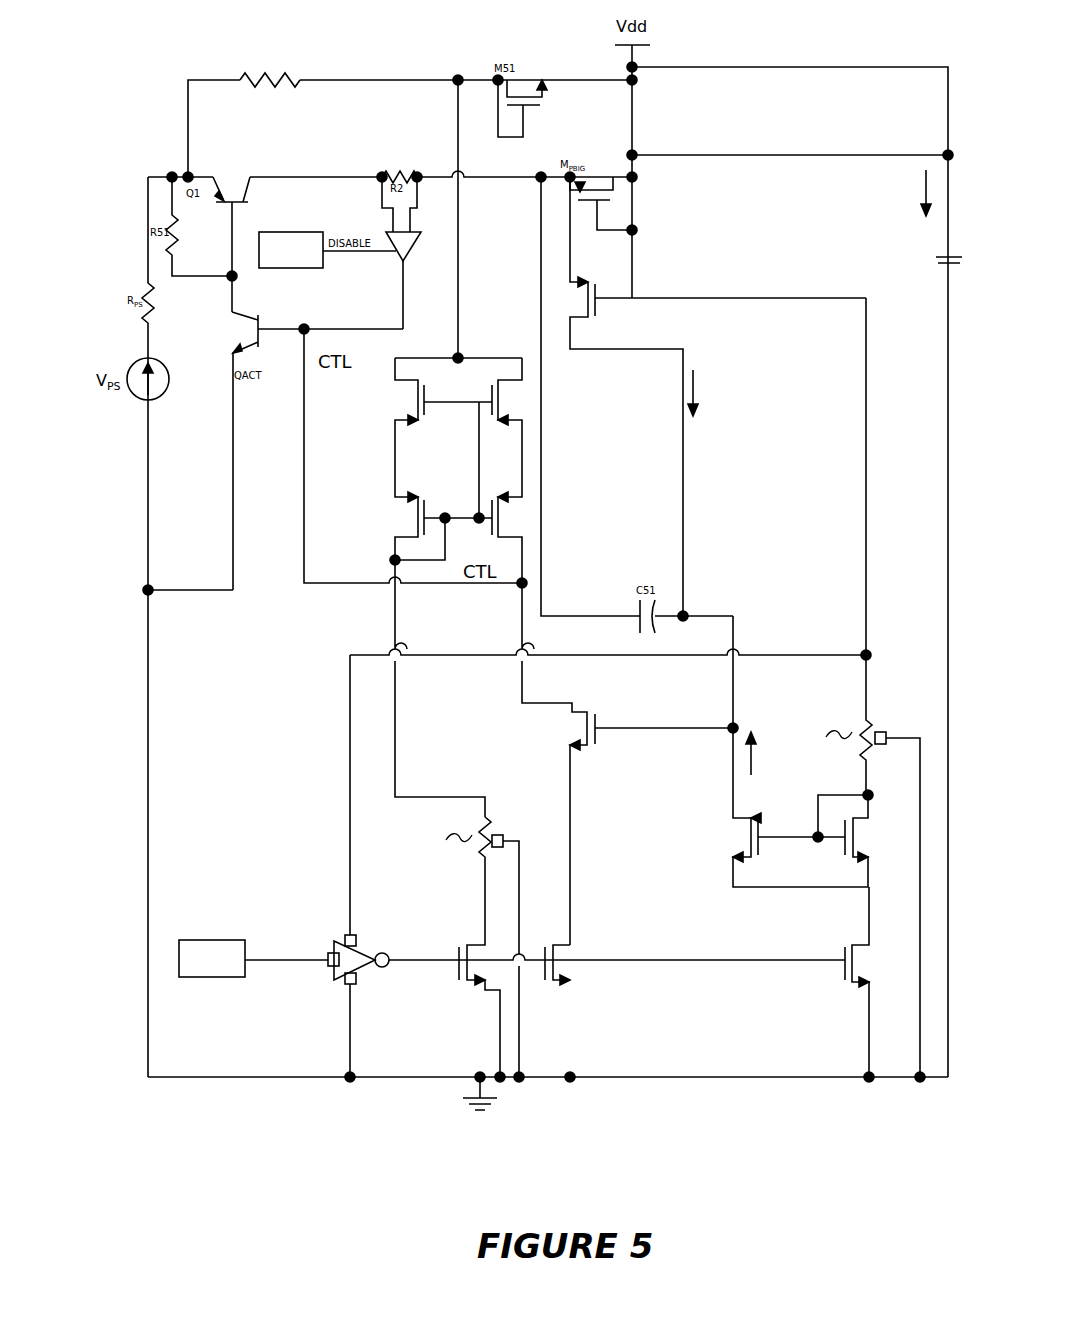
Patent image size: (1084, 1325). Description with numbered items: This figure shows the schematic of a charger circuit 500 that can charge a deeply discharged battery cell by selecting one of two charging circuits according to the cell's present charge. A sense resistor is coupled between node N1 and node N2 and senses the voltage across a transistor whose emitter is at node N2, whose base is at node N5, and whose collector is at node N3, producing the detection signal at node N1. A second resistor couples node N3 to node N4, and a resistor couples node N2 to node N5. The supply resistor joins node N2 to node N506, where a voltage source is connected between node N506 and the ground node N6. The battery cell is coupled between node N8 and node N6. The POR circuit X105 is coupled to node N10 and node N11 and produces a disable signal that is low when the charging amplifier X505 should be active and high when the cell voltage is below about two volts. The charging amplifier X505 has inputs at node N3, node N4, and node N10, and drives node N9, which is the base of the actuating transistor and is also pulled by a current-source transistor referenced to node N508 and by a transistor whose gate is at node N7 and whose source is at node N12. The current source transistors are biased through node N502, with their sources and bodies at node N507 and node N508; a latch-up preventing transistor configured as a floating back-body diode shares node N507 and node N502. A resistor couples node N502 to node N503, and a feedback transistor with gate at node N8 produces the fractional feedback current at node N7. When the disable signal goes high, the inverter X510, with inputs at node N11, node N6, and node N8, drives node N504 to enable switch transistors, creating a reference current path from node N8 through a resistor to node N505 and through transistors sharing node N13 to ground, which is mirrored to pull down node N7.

The charger circuit 500 is at (144, 52).
The node N1 is at (434, 65).
The node N2 is at (146, 177).
The node N3 is at (349, 167).
The node N4 is at (431, 175).
The node N5 is at (216, 267).
The node N6 is at (355, 1090).
The node N7 is at (578, 356).
The node N8 is at (924, 63).
The node N9 is at (320, 338).
The node N10 is at (356, 262).
The node N11 is at (288, 976).
The node N12 is at (580, 822).
The node N13 is at (726, 883).
The node N502 is at (444, 516).
The node N503 is at (473, 901).
The node N504 is at (690, 977).
The node N505 is at (812, 793).
The node N506 is at (150, 348).
The node N507 is at (388, 453).
The node N508 is at (526, 468).
The POR circuit X105 is at (294, 232).
The charging amplifier X505 is at (418, 242).
The inverter X510 is at (373, 978).